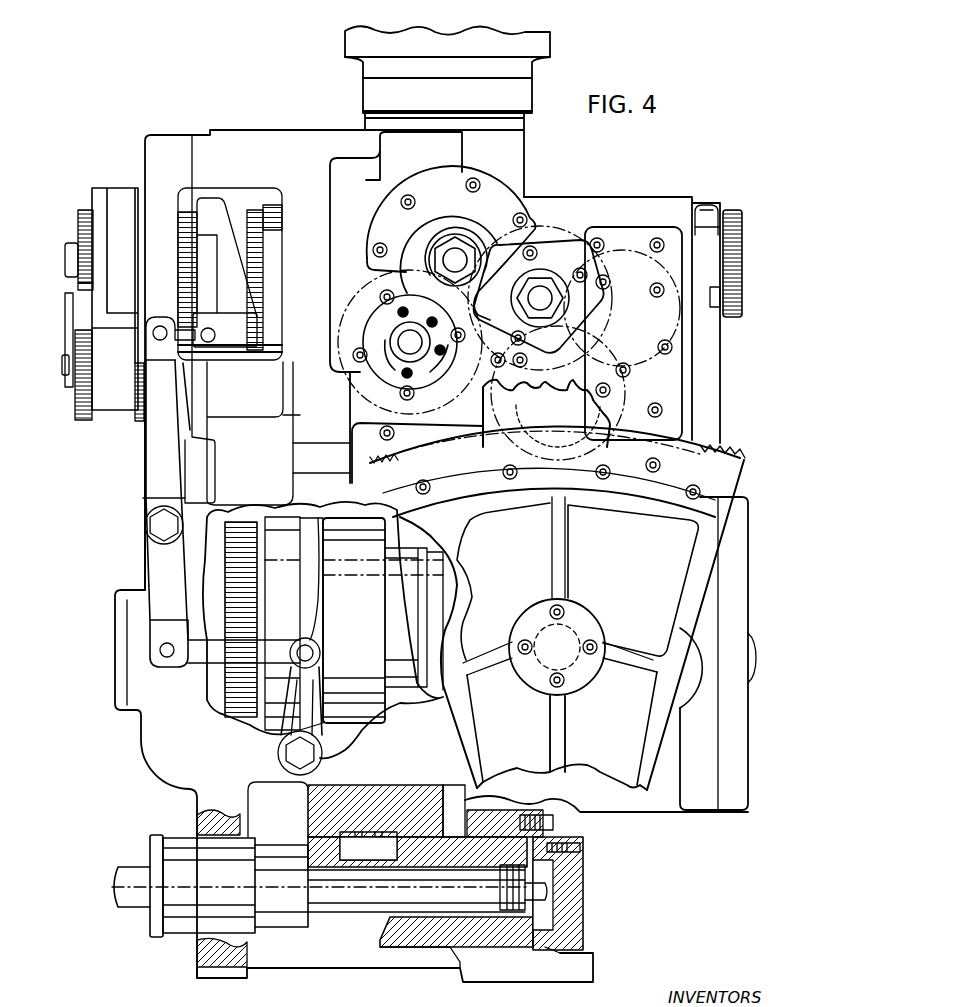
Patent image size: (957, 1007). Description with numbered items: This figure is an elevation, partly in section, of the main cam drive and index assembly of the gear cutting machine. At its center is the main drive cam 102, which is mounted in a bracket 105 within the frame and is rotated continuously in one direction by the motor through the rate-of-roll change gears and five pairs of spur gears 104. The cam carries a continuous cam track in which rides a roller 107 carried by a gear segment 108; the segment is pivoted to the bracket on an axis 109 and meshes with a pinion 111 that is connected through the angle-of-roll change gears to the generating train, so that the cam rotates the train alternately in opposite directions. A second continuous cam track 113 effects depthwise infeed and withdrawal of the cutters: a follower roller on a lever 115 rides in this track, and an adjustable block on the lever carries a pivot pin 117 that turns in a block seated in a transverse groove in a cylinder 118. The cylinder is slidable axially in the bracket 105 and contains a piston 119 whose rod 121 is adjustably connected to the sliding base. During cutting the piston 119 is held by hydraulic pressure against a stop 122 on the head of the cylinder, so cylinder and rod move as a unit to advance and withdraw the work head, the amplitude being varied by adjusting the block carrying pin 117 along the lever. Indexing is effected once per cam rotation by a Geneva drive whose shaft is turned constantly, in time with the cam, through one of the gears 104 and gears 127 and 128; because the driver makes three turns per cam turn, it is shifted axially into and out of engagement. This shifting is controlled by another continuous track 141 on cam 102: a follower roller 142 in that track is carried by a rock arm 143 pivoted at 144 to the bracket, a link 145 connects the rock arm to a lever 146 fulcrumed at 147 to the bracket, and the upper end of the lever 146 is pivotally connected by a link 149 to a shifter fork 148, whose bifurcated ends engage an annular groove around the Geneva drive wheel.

The main drive cam 102 is at (370, 666).
The spur gears 104 is at (236, 545).
The bracket 105 is at (168, 757).
The roller 107 is at (580, 668).
The gear segment 108 is at (713, 467).
The axis 109 is at (557, 928).
The pinion 111 is at (560, 360).
The cam track 113 is at (440, 610).
The lever 115 is at (385, 810).
The pivot pin 117 is at (353, 848).
The cylinder 118 is at (408, 925).
The piston 119 is at (505, 920).
The rod 121 is at (125, 878).
The stop 122 is at (535, 882).
The gear 127 is at (137, 422).
The gear 128 is at (75, 345).
The cam track 141 is at (312, 595).
The follower roller 142 is at (318, 650).
The rock arm 143 is at (298, 710).
The pivot 144 is at (300, 755).
The link 145 is at (205, 655).
The lever 146 is at (157, 470).
The fulcrum 147 is at (164, 527).
The shifter fork 148 is at (200, 208).
The link 149 is at (183, 333).